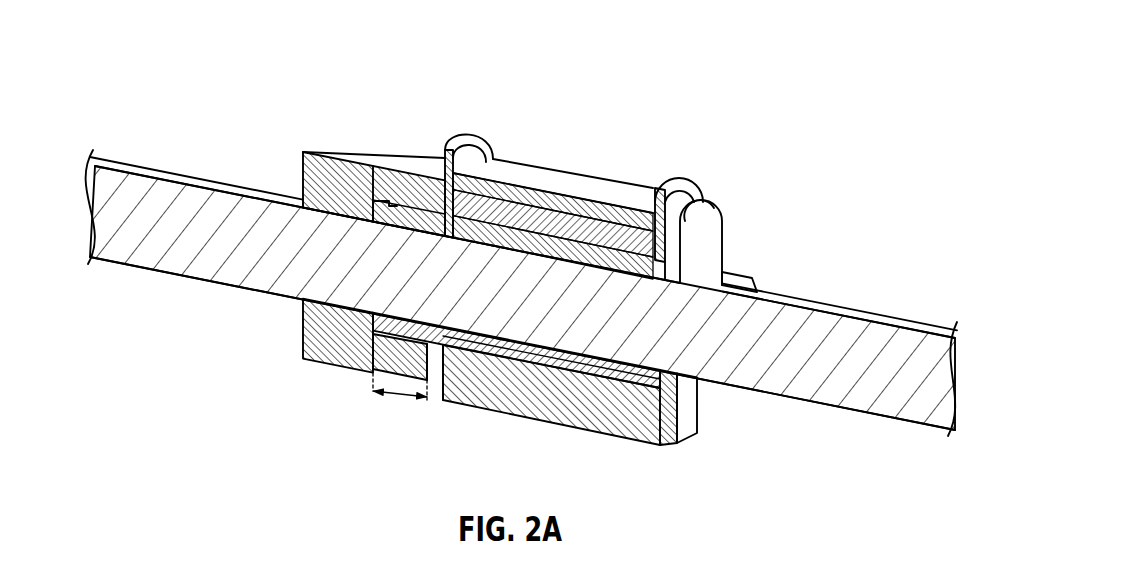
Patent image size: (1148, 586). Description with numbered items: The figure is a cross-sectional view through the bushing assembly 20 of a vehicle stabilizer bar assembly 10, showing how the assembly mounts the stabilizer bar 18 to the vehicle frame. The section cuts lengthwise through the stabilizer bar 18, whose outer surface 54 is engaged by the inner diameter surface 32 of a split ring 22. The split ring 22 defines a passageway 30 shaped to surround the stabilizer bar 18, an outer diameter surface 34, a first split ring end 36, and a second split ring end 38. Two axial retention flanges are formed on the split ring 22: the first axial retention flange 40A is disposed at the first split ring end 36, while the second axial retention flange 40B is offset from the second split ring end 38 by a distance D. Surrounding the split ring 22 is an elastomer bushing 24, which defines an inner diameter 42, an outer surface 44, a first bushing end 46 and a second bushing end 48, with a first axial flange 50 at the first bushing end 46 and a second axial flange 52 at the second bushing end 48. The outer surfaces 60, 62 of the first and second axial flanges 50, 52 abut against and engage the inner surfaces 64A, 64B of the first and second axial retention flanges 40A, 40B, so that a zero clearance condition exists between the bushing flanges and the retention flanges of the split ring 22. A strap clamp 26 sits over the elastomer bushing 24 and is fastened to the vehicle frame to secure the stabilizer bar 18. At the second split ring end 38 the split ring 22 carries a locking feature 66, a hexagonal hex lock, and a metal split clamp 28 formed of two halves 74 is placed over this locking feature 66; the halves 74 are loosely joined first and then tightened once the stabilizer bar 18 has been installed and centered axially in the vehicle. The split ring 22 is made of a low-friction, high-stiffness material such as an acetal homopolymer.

The stabilizer bar assembly 10 is at (705, 40).
The stabilizer bar 18 is at (190, 203).
The bushing assembly 20 is at (266, 371).
The split ring 22 is at (745, 231).
The elastomer bushing 24 is at (719, 180).
The strap clamp 26 is at (593, 172).
The split clamp 28 is at (327, 136).
The passageway 30 is at (659, 292).
The inner diameter surface 32 is at (522, 350).
The outer diameter surface 34 is at (484, 215).
The first split ring end 36 is at (690, 436).
The second split ring end 38 is at (367, 192).
The first axial retention flange 40A is at (706, 224).
The second axial retention flange 40B is at (443, 401).
The inner diameter 42 is at (512, 236).
The outer surface 44 is at (553, 190).
The first bushing end 46 is at (668, 174).
The second bushing end 48 is at (469, 131).
The first axial flange 50 is at (700, 180).
The second axial flange 52 is at (457, 140).
The outer surface 54 is at (100, 153).
The outer surface 60 is at (672, 243).
The outer surface 62 is at (447, 200).
The inner surface 64A is at (655, 232).
The inner surface 64B is at (430, 180).
The locking feature 66 is at (380, 323).
The halves 74 is at (302, 178).
The distance D is at (396, 400).